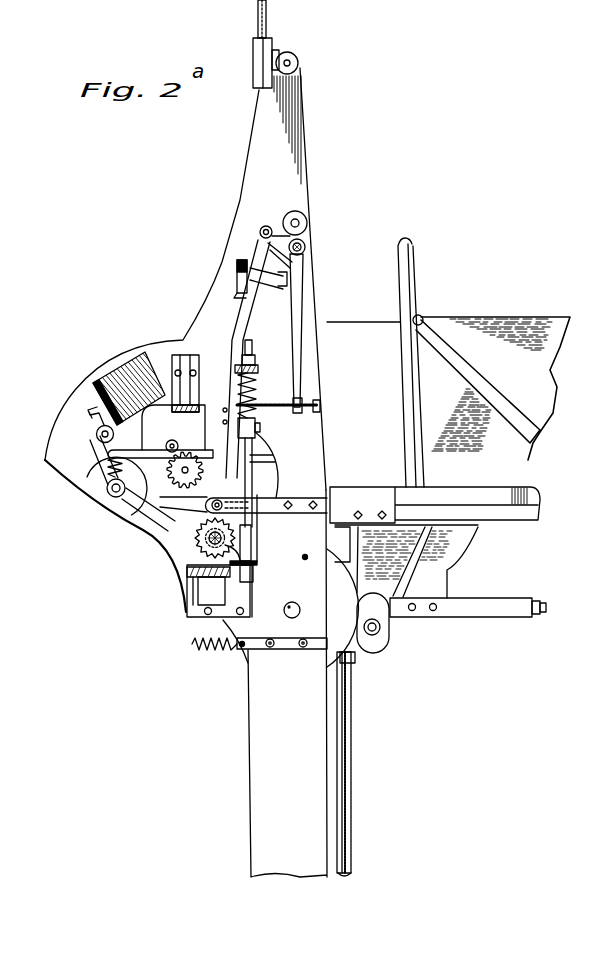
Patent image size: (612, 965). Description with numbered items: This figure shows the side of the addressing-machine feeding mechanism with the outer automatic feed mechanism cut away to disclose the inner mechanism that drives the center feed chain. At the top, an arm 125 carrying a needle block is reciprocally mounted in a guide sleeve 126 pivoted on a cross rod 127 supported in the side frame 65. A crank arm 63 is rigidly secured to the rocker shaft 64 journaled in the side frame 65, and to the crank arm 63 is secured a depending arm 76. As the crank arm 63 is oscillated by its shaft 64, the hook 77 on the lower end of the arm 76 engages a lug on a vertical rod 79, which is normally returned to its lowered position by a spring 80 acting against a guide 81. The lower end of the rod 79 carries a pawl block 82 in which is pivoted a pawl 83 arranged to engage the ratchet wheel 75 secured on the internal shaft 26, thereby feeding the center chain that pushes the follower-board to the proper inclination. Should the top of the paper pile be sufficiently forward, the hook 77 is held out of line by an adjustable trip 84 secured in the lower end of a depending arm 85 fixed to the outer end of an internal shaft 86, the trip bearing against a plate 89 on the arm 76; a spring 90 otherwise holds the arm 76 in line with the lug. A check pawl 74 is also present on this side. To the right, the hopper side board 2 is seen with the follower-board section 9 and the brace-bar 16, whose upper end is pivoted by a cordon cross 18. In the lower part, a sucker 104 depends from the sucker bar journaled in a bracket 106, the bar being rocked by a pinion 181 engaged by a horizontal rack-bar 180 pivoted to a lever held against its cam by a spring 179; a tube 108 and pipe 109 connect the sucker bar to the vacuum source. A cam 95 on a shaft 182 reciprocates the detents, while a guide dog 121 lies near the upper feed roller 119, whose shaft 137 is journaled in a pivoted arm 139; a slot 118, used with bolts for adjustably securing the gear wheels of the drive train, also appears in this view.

The arm 125 is at (266, 24).
The guide sleeve 126 is at (257, 72).
The cross rod 127 is at (298, 62).
The side frame 65 is at (311, 160).
The crank arm 63 is at (278, 223).
The shaft 64 is at (305, 222).
The internal shaft 86 is at (306, 247).
The depending arm 85 is at (297, 293).
The spring 90 is at (235, 283).
The depending arm 76 is at (237, 327).
The guide 81 is at (254, 364).
The spring 80 is at (255, 391).
The adjustable trip 84 is at (313, 402).
The slot 118 is at (256, 437).
The hook 77 is at (252, 458).
The vertical rod 79 is at (246, 486).
The pawl 83 is at (257, 545).
The pawl block 82 is at (254, 575).
The tube 108 is at (342, 510).
The cam 95 is at (360, 652).
The pipe 109 is at (351, 742).
The follower-board section 9 is at (410, 300).
The cordon cross 18 is at (423, 318).
The brace-bar 16 is at (513, 416).
The side board 2 is at (501, 326).
The sucker 104 is at (140, 473).
The rack-bar 180 is at (98, 438).
The shaft 137 is at (108, 490).
The feed roller 119 is at (137, 478).
The pivoted arm 139 is at (187, 503).
The bracket 106 is at (173, 394).
The plate 89 is at (216, 430).
The pinion 181 is at (183, 482).
The check pawl 74 is at (196, 541).
The guide dog 121 is at (153, 527).
The ratchet wheel 75 is at (205, 545).
The internal shaft 26 is at (190, 566).
The shaft 182 is at (290, 616).
The spring 179 is at (230, 632).